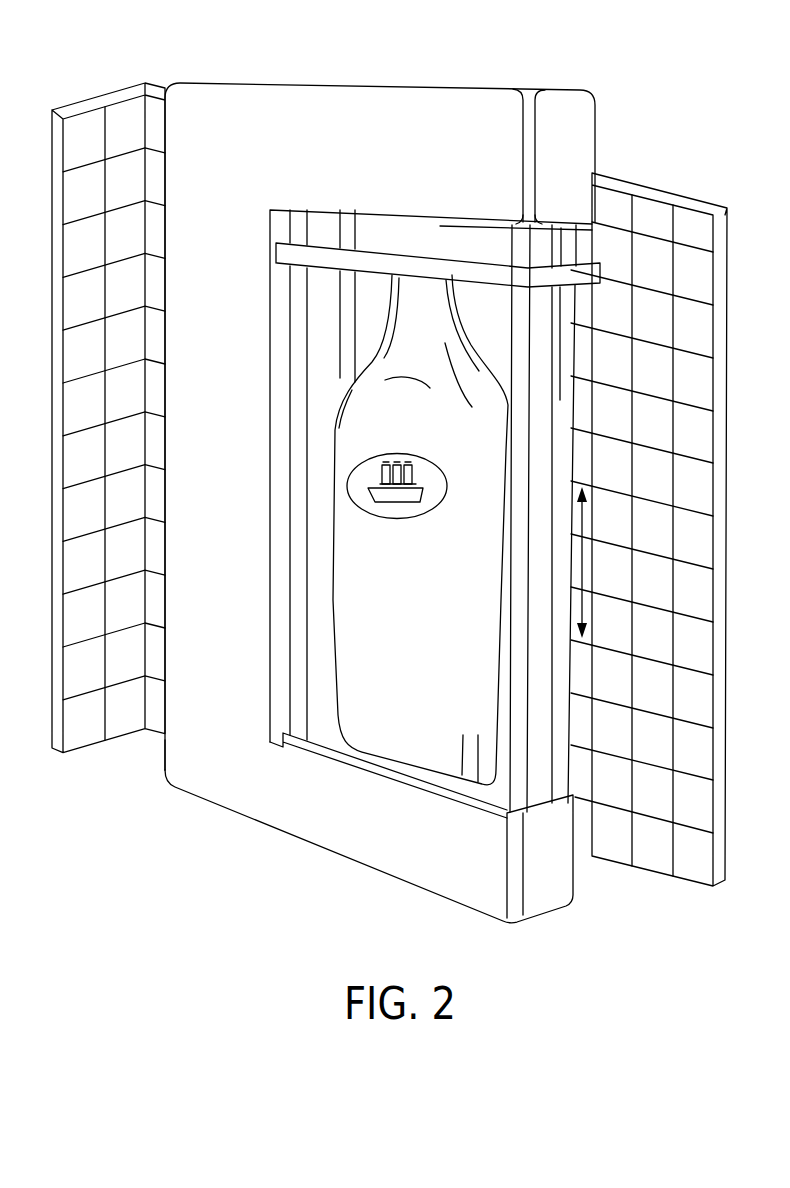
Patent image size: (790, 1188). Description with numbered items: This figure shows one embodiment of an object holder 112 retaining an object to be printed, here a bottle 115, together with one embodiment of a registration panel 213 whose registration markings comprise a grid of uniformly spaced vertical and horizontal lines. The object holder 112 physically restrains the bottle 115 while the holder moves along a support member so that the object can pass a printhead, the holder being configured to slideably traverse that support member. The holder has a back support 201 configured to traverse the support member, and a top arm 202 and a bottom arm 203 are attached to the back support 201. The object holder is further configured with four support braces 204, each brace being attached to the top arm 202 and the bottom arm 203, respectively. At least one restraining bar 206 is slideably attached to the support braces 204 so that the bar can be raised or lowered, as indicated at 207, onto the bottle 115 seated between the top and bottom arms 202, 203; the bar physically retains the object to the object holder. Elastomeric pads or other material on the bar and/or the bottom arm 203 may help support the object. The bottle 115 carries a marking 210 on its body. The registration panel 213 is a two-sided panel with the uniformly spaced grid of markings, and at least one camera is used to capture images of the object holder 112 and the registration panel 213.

The object holder 112 is at (485, 89).
The bottle 115 is at (407, 738).
The back support 201 is at (151, 765).
The top arm 202 is at (568, 176).
The bottom arm 203 is at (307, 813).
The support braces 204 is at (300, 330).
The restraining bar 206 is at (385, 252).
The raising or lowering direction 207 is at (584, 563).
The logo 210 is at (398, 519).
The registration panel 213 is at (99, 70).